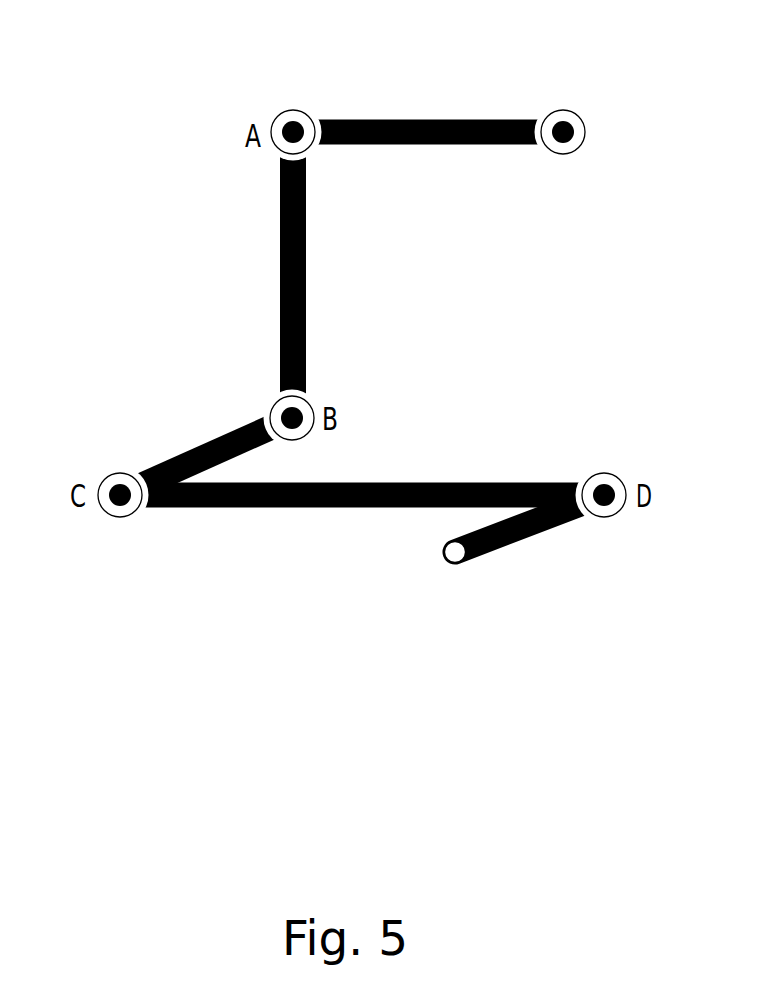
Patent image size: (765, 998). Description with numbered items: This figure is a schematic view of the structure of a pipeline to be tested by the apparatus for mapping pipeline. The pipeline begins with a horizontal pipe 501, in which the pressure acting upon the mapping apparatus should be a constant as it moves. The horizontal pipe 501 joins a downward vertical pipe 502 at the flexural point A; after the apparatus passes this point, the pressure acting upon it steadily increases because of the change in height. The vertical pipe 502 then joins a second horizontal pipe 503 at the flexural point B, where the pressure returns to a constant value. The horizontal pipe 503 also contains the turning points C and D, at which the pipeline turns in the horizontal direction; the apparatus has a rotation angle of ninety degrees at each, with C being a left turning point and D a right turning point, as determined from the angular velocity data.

The horizontal pipe 501 is at (410, 118).
The vertical pipe 502 is at (281, 263).
The horizontal pipe 503 is at (222, 440).